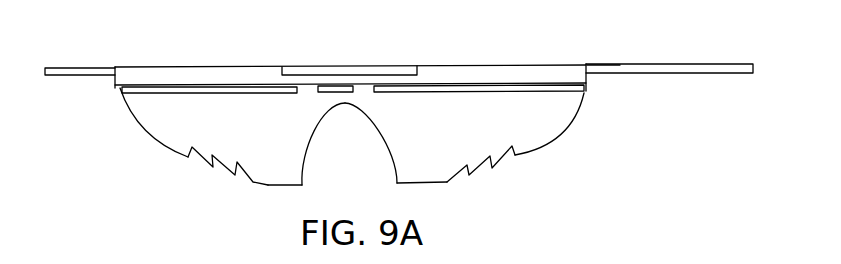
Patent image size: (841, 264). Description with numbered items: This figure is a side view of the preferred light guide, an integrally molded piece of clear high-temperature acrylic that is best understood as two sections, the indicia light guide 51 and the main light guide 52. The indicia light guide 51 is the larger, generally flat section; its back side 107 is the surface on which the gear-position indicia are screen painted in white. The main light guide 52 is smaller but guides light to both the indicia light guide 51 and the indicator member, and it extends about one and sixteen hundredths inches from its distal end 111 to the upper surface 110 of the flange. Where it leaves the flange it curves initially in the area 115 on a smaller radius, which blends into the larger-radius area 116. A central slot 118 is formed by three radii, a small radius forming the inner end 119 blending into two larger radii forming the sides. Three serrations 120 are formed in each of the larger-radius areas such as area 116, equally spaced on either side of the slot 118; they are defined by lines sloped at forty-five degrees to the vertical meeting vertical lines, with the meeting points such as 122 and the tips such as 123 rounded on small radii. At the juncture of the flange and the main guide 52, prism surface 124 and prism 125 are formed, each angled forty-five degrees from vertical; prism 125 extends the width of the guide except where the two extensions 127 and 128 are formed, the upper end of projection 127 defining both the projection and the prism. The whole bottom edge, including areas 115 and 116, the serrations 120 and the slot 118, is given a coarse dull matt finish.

The indicia light guide 51 is at (598, 68).
The main light guide 52 is at (540, 123).
The back side (lower surface) of guide 51 107 is at (674, 73).
The upper surface of flange 97 110 is at (152, 67).
The distal end of main light guide 111 is at (302, 186).
The initially curved area 115 is at (148, 130).
The 2.290 inch radius area 116 is at (268, 185).
The central slot 118 is at (365, 178).
The inner end of central slot 119 is at (345, 105).
The serrations 120 is at (182, 178).
The meeting point of serration lines 122 is at (237, 162).
The serration tip 123 is at (492, 167).
The prism surface 124 is at (308, 70).
The prism 125 is at (142, 90).
The extension (projection) 127 is at (305, 90).
The extension 128 is at (363, 92).